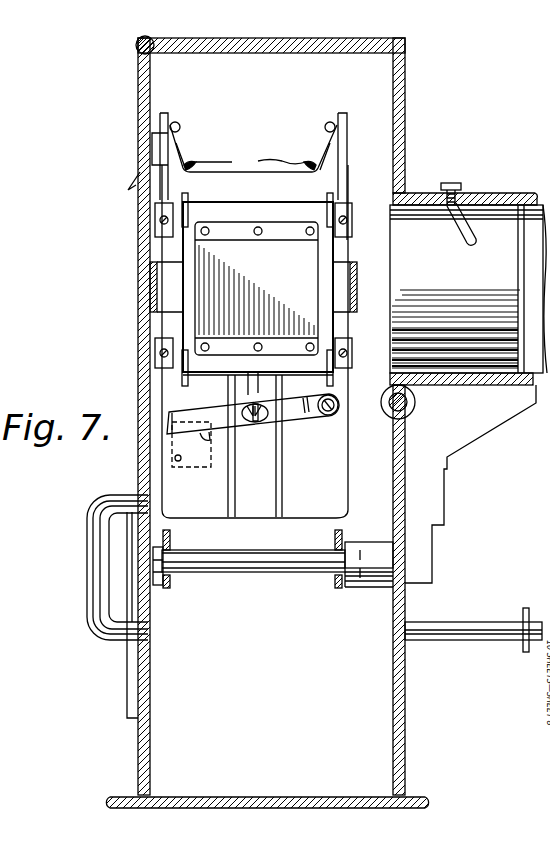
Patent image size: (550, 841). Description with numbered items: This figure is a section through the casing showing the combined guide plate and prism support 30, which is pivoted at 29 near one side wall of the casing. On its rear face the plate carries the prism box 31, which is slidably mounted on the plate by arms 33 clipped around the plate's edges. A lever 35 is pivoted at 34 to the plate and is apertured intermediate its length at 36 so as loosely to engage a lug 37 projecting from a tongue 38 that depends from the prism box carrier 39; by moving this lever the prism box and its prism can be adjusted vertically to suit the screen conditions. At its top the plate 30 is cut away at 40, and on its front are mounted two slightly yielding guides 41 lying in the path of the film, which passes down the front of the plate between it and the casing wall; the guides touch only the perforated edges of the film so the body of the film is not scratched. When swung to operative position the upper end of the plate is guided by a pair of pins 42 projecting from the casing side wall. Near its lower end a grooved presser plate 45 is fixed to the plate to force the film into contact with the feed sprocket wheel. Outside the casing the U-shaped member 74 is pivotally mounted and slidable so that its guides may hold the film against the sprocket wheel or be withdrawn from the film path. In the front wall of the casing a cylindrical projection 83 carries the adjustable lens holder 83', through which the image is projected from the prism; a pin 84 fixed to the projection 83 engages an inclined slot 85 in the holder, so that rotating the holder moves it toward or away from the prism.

The pivot 29 is at (361, 578).
The combined guide plate and prism support 30 is at (255, 341).
The prism box 31 is at (256, 288).
The arms 33 is at (152, 280).
The pivot 34 is at (337, 413).
The lever 35 is at (196, 413).
The aperture 36 is at (266, 428).
The lug 37 is at (262, 408).
The tongue 38 is at (250, 384).
The prism box carrier 39 is at (285, 200).
The cut-away 40 is at (181, 146).
The yielding guides 41 is at (251, 155).
The pins 42 is at (179, 123).
The presser plate 45 is at (201, 466).
The U-shaped member 74 is at (88, 588).
The cylindrical projection 83 is at (459, 364).
The adjustable lens holder 83' is at (468, 289).
The pin 84 is at (458, 184).
The inclined slot 85 is at (453, 227).